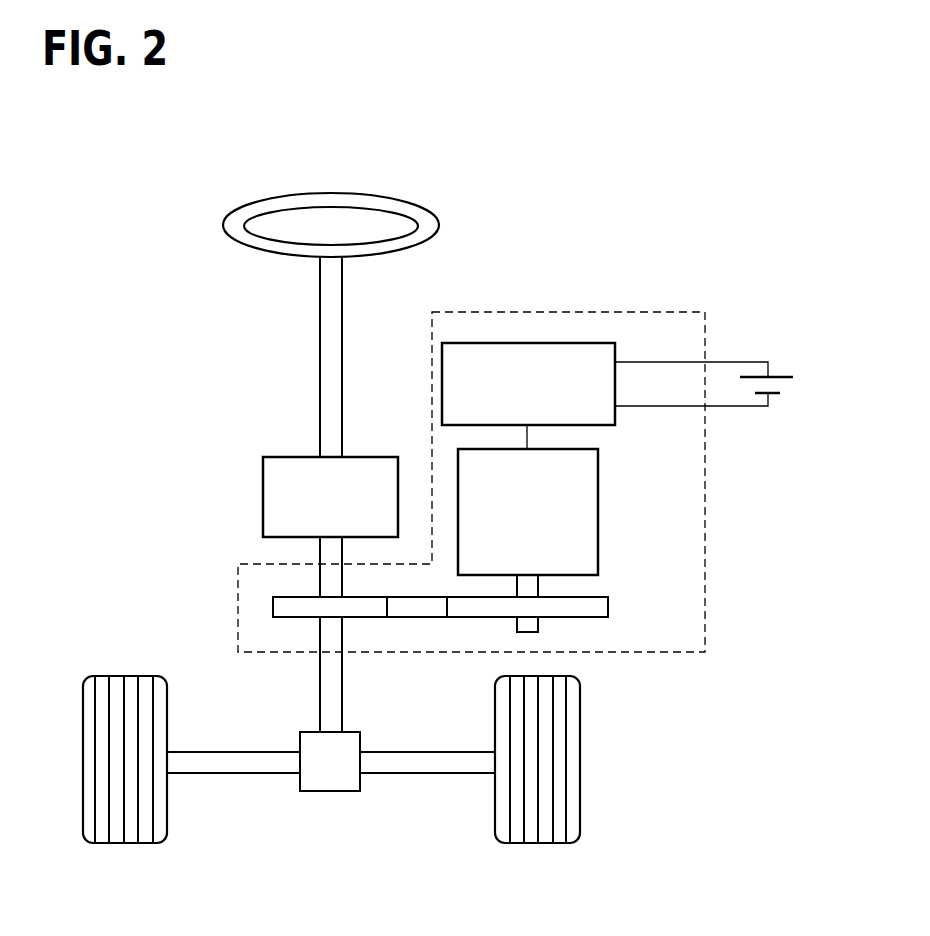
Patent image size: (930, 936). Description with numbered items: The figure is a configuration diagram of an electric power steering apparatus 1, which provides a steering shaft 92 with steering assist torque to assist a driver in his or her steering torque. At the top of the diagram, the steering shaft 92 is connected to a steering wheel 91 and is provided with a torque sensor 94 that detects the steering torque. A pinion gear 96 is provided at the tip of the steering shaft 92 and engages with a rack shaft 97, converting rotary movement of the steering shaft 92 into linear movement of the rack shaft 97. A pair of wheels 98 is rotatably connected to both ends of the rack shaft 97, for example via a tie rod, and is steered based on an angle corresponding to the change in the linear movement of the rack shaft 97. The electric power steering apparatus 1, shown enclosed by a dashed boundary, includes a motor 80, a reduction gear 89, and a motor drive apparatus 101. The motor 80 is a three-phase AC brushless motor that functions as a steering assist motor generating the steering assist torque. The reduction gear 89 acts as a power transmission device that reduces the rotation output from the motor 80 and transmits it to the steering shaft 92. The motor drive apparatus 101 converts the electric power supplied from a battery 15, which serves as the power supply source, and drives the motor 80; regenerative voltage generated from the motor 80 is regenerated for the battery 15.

The electric power steering apparatus 1 is at (683, 312).
The battery 15 is at (778, 377).
The motor 80 is at (598, 505).
The reduction gear 89 is at (608, 604).
The steering wheel 91 is at (223, 226).
The steering shaft 92 is at (320, 314).
The torque sensor 94 is at (263, 489).
The pinion gear 96 is at (322, 791).
The rack shaft 97 is at (227, 773).
The wheels 98 is at (140, 843).
The motor drive apparatus 101 is at (527, 343).